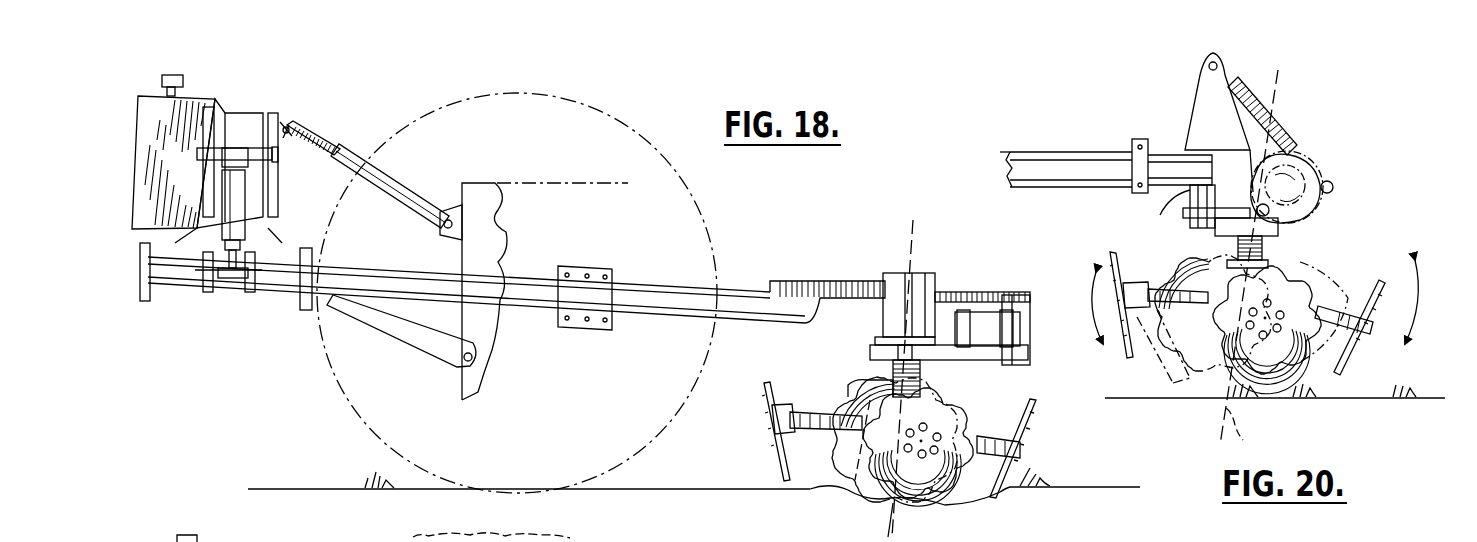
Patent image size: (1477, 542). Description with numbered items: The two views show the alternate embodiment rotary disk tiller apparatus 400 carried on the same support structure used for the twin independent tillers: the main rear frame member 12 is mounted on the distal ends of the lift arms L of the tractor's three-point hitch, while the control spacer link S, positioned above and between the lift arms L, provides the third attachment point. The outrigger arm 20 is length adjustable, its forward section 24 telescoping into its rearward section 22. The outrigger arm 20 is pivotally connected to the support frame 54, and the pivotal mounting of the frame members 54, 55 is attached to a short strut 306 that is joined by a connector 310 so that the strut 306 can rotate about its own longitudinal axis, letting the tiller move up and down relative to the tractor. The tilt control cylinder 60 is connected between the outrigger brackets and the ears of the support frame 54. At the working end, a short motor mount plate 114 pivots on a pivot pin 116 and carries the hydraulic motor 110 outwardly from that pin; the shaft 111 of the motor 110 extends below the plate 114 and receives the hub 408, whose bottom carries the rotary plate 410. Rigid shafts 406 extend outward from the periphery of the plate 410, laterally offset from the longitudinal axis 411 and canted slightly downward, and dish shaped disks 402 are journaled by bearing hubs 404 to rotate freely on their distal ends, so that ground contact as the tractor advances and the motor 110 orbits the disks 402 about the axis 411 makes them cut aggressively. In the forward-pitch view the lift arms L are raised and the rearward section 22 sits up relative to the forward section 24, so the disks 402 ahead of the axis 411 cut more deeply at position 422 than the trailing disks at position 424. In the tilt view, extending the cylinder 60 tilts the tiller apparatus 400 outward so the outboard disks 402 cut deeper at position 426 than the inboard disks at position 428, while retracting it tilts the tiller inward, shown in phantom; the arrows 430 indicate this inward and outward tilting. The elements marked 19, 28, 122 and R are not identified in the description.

In FIG. 20, the main rear frame member 12 is at (1093, 152).
In FIG. 18, the pivot pin 19 is at (290, 127).
In FIG. 18, the outrigger arm 20 is at (508, 282).
In FIG. 20, the outrigger arm 20 is at (1320, 213).
In FIG. 18, the rearward section 22 is at (312, 312).
In FIG. 18, the forward section 24 is at (648, 280).
In FIG. 18, the threaded rod 28 is at (868, 286).
In FIG. 20, the support frame 54 is at (1192, 228).
In FIG. 20, the frame member 55 is at (1195, 110).
In FIG. 18, the hydraulic cylinder 60 is at (255, 212).
In FIG. 20, the hydraulic cylinder 60 is at (1283, 130).
In FIG. 18, the hydraulic motor 110 is at (883, 300).
In FIG. 18, the shaft 111 is at (918, 375).
In FIG. 18, the motor mount plate 114 is at (990, 360).
In FIG. 18, the pivot pin 116 is at (1025, 340).
In FIG. 18, the cross member 122 is at (975, 320).
In FIG. 20, the strut 306 is at (1185, 192).
In FIG. 20, the connector 310 is at (1130, 190).
In FIG. 18, the tiller apparatus 400 is at (826, 394).
In FIG. 20, the tiller apparatus 400 is at (1290, 252).
In FIG. 18, the dish shaped disks 402 is at (770, 470).
In FIG. 20, the dish shaped disks 402 is at (1125, 268).
In FIG. 18, the journal bearing hubs 404 is at (775, 425).
In FIG. 18, the shafts 406 is at (775, 400).
In FIG. 18, the hub 408 is at (872, 382).
In FIG. 18, the rotary plate 410 is at (860, 500).
In FIG. 18, the longitudinal axis 411 is at (893, 541).
In FIG. 20, the longitudinal axis 411 is at (1233, 440).
In FIG. 18, the position 422 is at (1003, 500).
In FIG. 18, the position 424 is at (797, 480).
In FIG. 20, the position 426 is at (1320, 374).
In FIG. 20, the position 428 is at (1128, 365).
In FIG. 20, the arrows 430 is at (1088, 298).
In FIG. 18, the lift arms L is at (398, 340).
In FIG. 18, the rotation radius circle R is at (705, 190).
In FIG. 18, the control spacer link S is at (400, 185).